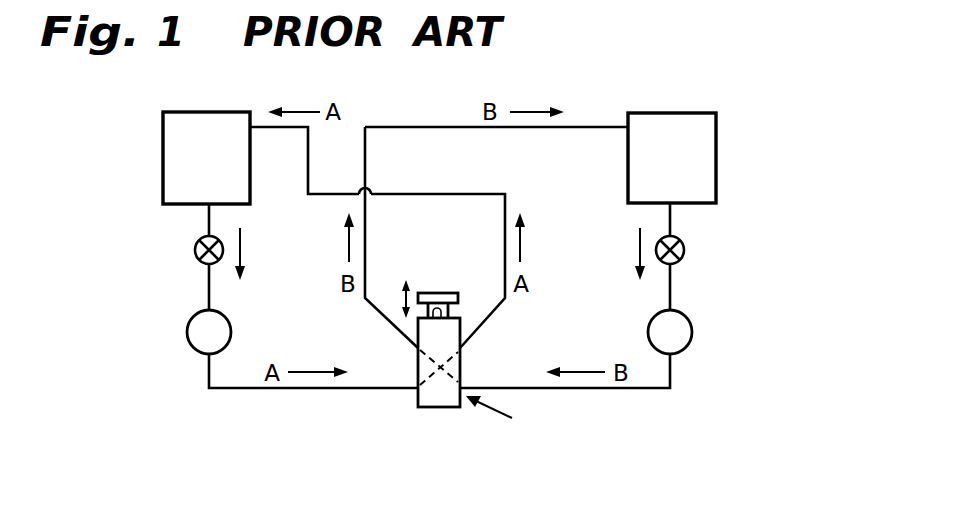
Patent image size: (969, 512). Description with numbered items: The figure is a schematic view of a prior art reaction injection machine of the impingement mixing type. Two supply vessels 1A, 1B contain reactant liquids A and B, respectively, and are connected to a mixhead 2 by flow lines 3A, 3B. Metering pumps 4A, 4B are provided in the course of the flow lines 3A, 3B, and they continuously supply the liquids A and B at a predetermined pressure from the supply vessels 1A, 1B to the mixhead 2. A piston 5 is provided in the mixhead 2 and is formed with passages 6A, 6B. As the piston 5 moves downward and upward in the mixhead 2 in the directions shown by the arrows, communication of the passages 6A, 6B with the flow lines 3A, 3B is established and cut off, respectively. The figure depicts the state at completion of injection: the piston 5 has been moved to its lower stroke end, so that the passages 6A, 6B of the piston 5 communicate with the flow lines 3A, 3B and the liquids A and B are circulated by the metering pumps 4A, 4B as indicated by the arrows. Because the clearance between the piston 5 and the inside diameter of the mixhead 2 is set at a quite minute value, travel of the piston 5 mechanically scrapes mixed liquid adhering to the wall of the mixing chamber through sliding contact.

The supply vessel 1A is at (163, 150).
The supply vessel 1B is at (716, 148).
The metering pump 4A is at (187, 330).
The metering pump 4B is at (692, 327).
The flow line 3A is at (242, 389).
The flow line 3B is at (599, 389).
The mixhead 2 is at (455, 407).
The piston 5 is at (437, 293).
The passage 6A is at (433, 378).
The passage 6B is at (462, 367).